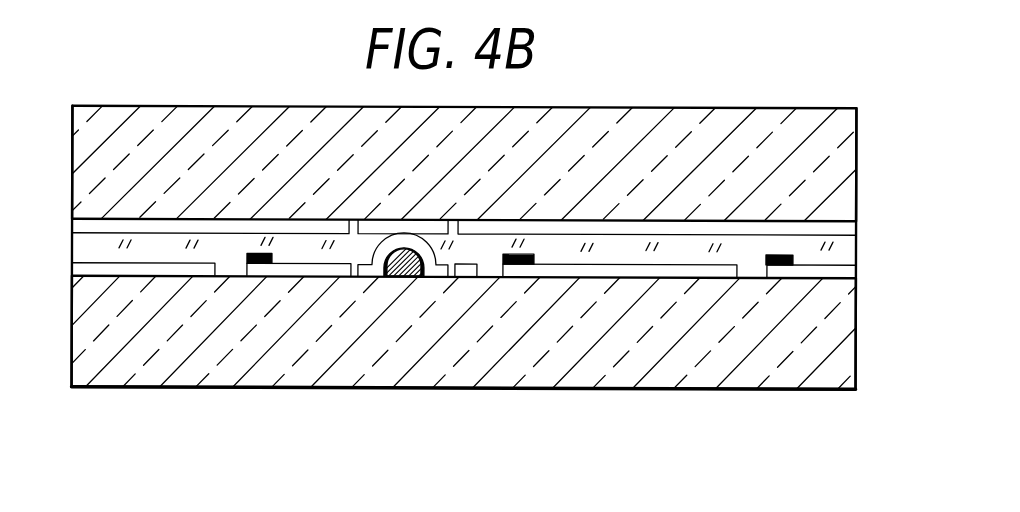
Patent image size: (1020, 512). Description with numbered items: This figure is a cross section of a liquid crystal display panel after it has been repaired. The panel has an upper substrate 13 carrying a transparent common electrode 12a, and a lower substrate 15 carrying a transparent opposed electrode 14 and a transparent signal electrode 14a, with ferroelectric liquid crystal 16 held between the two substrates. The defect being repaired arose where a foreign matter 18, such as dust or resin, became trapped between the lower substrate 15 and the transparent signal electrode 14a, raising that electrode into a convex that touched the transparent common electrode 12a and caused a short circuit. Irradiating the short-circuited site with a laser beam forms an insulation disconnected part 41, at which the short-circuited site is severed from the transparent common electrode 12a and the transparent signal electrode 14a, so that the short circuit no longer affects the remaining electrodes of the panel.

The upper substrate 13 is at (856, 189).
The transparent common electrode 12a is at (856, 228).
The ferroelectric liquid crystal 16 is at (856, 255).
The transparent opposed electrode 14 is at (856, 273).
The transparent signal electrode 14a is at (291, 277).
The lower substrate 15 is at (856, 340).
The foreign matter 18 is at (402, 277).
The insulation disconnected part 41 is at (470, 302).